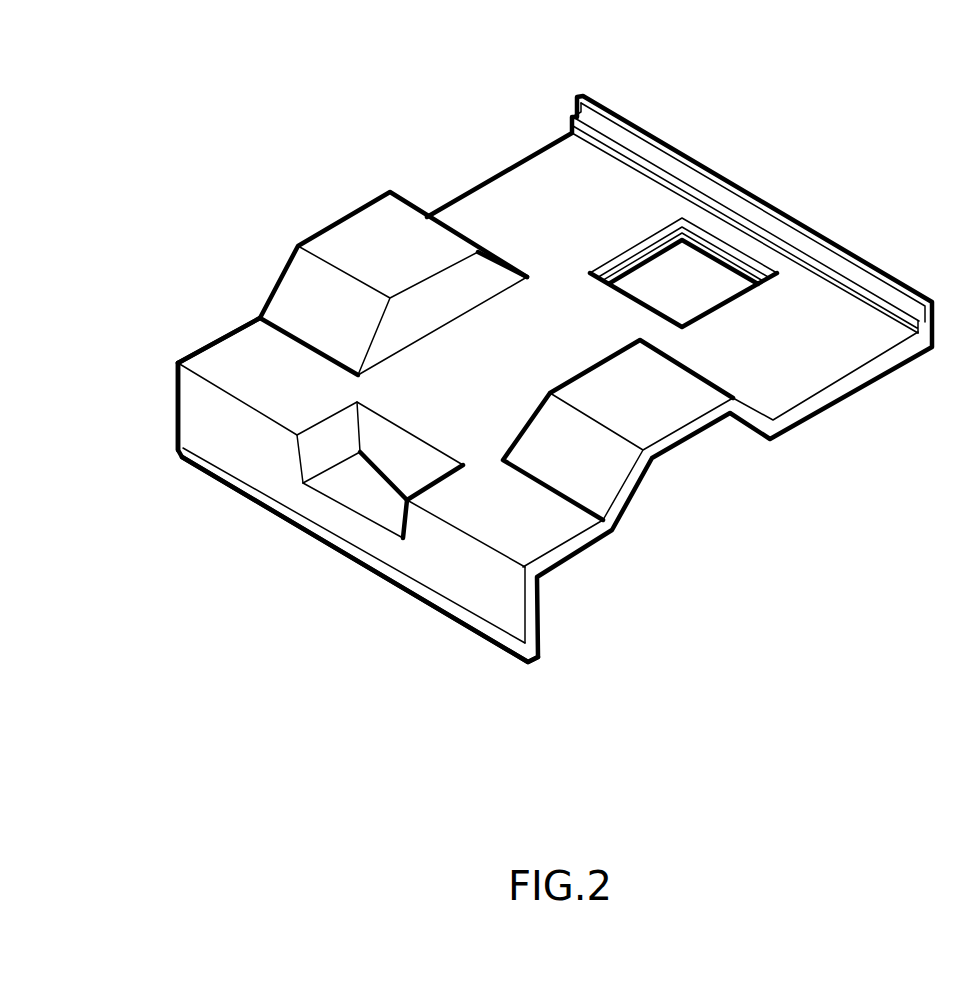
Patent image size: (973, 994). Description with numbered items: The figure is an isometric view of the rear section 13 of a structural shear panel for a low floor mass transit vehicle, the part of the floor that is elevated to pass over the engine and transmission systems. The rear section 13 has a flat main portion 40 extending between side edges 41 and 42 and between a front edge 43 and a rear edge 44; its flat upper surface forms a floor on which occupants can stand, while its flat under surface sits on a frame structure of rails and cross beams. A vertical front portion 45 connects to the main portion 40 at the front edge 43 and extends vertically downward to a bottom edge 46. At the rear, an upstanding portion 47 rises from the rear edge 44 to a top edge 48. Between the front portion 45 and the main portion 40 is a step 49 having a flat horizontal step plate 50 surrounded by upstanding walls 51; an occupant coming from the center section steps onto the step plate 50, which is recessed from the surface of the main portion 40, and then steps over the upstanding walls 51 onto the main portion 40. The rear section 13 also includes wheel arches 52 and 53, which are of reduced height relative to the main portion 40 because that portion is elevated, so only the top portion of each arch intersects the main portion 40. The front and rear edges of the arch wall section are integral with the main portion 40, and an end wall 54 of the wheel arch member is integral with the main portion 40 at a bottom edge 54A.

The rear section 13 is at (356, 116).
The main portion 40 is at (245, 350).
The side edge 41 is at (483, 178).
The side edge 42 is at (877, 368).
The front edge 43 is at (218, 388).
The rear edge 44 is at (603, 152).
The vertical front portion 45 is at (200, 433).
The bottom edge 46 is at (228, 490).
The upstanding portion 47 is at (743, 207).
The top edge 48 is at (668, 152).
The step 49 is at (392, 438).
The step plate 50 is at (370, 492).
The upstanding walls 51 is at (330, 447).
The wheel arch 52 is at (378, 233).
The wheel arch 53 is at (660, 402).
The end wall 54 is at (492, 278).
The bottom edge 54A is at (470, 313).